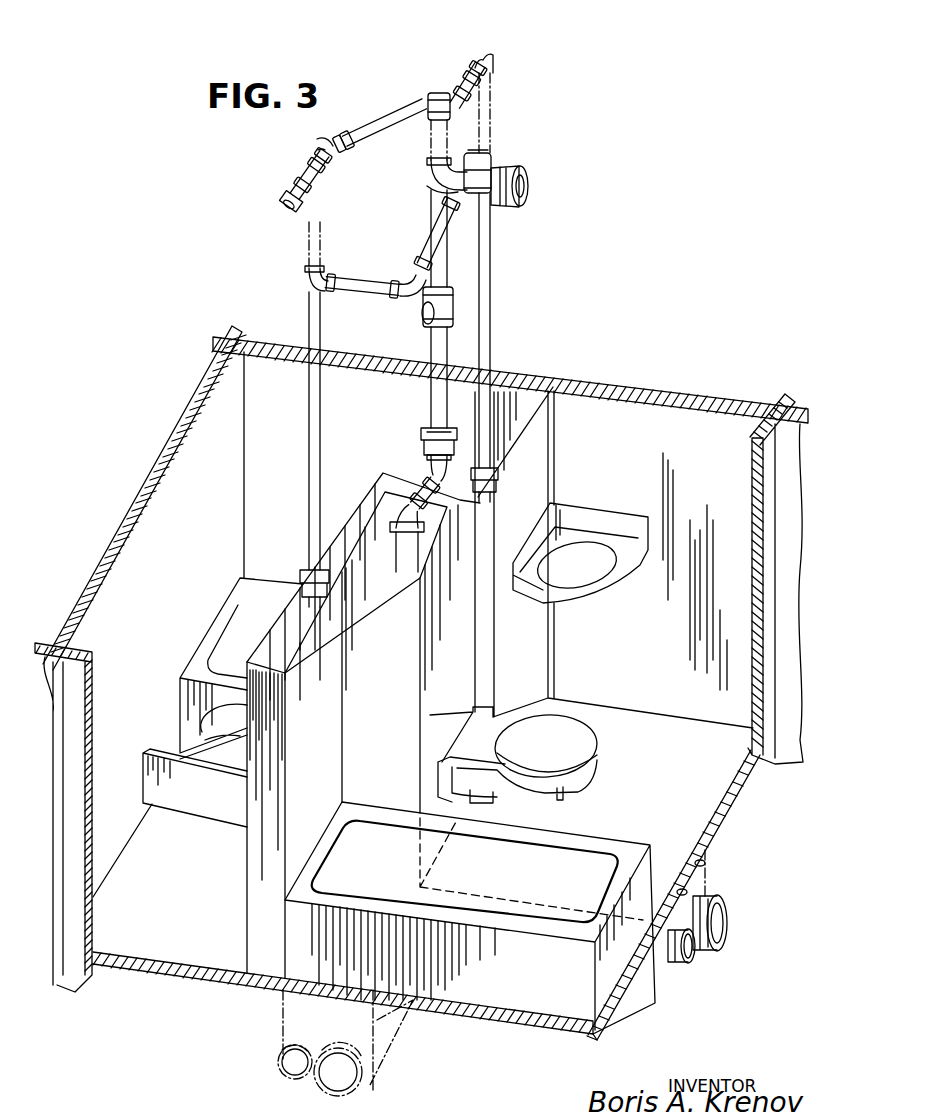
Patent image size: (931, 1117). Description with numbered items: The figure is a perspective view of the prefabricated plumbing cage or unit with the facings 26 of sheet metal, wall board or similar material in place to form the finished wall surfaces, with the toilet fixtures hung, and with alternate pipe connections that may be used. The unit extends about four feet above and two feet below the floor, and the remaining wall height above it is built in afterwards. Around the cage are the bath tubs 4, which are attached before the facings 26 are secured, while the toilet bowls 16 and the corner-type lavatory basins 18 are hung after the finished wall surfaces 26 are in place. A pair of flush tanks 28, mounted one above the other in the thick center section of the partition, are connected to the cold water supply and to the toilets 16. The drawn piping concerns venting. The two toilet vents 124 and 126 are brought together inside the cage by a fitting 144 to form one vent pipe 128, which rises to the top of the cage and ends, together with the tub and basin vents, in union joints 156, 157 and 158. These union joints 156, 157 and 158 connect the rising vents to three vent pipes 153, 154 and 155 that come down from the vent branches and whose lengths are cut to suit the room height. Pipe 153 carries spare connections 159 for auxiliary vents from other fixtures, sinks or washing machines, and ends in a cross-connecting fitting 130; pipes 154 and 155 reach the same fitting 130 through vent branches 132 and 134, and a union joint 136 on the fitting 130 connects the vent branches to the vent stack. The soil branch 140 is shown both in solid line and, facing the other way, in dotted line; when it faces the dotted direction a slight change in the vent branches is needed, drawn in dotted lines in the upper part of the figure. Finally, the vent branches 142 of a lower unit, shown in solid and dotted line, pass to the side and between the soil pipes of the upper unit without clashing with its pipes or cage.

The bath tub 4 is at (272, 597).
The toilet bowl 16 is at (208, 738).
The lavatory basin 18 is at (153, 784).
The facing 26 is at (392, 686).
The flush tank 28 is at (368, 532).
The toilet vent 124 is at (404, 575).
The toilet vent 126 is at (432, 534).
The vent pipe 128 is at (434, 465).
The cross-connecting fitting 130 is at (436, 173).
The vent branch 132 is at (424, 258).
The vent branch 134 is at (487, 163).
The union joint 136 is at (520, 182).
The soil branch 140 is at (718, 951).
The vent branches of lower unit 142 is at (686, 981).
The fitting 144 is at (420, 499).
The vent pipe 153 is at (436, 403).
The vent pipe 154 is at (310, 461).
The vent pipe 155 is at (488, 353).
The union joint 156 is at (426, 441).
The union joint 157 is at (305, 582).
The union joint 158 is at (497, 478).
The spare connection 159 is at (424, 314).